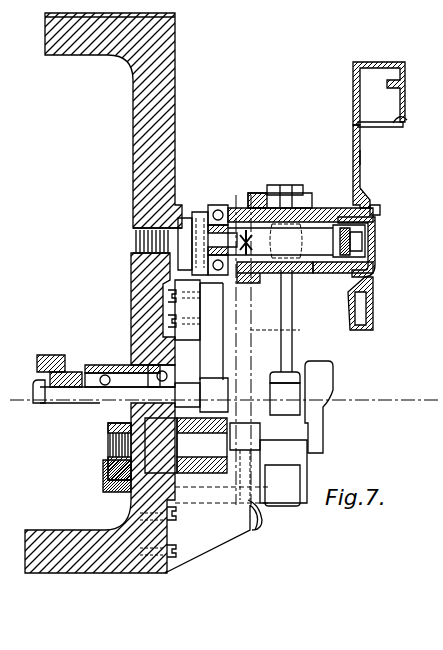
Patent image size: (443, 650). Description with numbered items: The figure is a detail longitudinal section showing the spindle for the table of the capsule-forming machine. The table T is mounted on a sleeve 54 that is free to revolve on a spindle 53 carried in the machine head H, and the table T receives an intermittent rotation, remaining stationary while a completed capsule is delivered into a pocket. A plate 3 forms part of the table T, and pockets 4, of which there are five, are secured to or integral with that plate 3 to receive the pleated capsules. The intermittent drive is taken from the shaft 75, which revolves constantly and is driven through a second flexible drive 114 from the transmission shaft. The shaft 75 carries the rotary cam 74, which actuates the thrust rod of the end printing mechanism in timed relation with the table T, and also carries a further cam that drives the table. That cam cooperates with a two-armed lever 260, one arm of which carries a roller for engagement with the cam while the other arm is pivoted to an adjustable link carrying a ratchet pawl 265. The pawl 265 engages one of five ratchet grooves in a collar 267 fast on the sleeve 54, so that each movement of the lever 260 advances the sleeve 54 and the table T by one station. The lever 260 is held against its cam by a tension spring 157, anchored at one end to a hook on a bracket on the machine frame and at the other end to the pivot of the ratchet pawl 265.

The machine head H is at (135, 137).
The pocket 4 is at (353, 86).
The plate 3 is at (353, 137).
The table T is at (368, 161).
The sleeve 54 is at (338, 213).
The spindle 53 is at (307, 235).
The ratchet pawl 265 is at (285, 196).
The collar 267 is at (297, 277).
The tension spring 157 is at (292, 332).
The rotary cam 74 is at (323, 373).
The two-armed lever 260 is at (283, 427).
The second flexible drive 114 is at (62, 356).
The shaft 75 is at (68, 387).